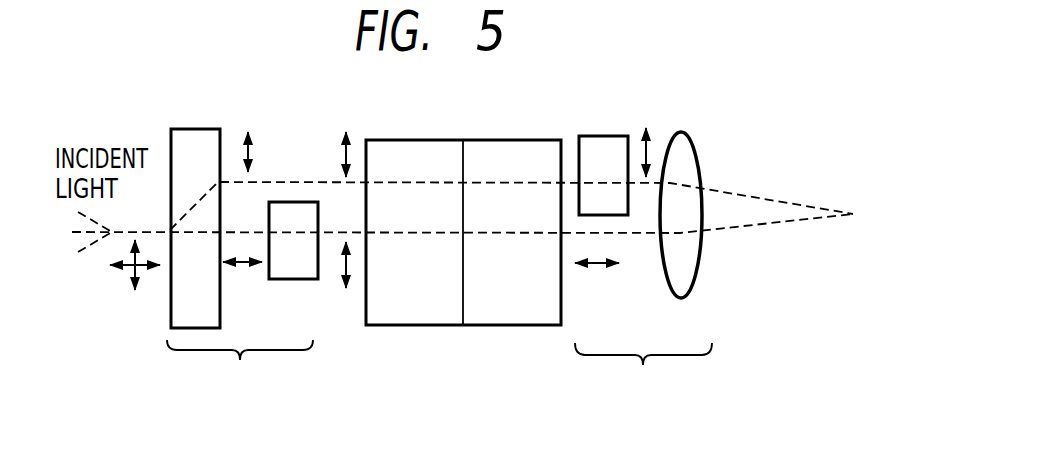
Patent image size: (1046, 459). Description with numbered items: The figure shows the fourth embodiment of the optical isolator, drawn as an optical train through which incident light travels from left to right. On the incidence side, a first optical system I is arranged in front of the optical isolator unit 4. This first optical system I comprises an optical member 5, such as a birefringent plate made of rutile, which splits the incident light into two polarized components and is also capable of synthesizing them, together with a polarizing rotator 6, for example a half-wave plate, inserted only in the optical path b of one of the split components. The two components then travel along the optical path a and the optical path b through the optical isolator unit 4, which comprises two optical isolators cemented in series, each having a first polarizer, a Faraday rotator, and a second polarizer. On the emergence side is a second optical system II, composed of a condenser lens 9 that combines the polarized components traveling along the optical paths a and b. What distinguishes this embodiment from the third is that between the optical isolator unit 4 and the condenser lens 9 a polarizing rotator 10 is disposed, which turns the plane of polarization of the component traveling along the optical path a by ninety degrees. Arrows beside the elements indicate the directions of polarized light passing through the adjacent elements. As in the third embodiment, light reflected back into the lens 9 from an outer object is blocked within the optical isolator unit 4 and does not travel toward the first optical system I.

The optical isolator unit 4 is at (531, 142).
The optical member 5 is at (210, 129).
The polarizing rotator 6 is at (302, 202).
The condenser lens 9 is at (692, 162).
The polarizing rotator 10 is at (614, 142).
The optical path a is at (398, 182).
The optical path b is at (402, 232).
The first optical system I is at (240, 369).
The second optical system II is at (643, 372).